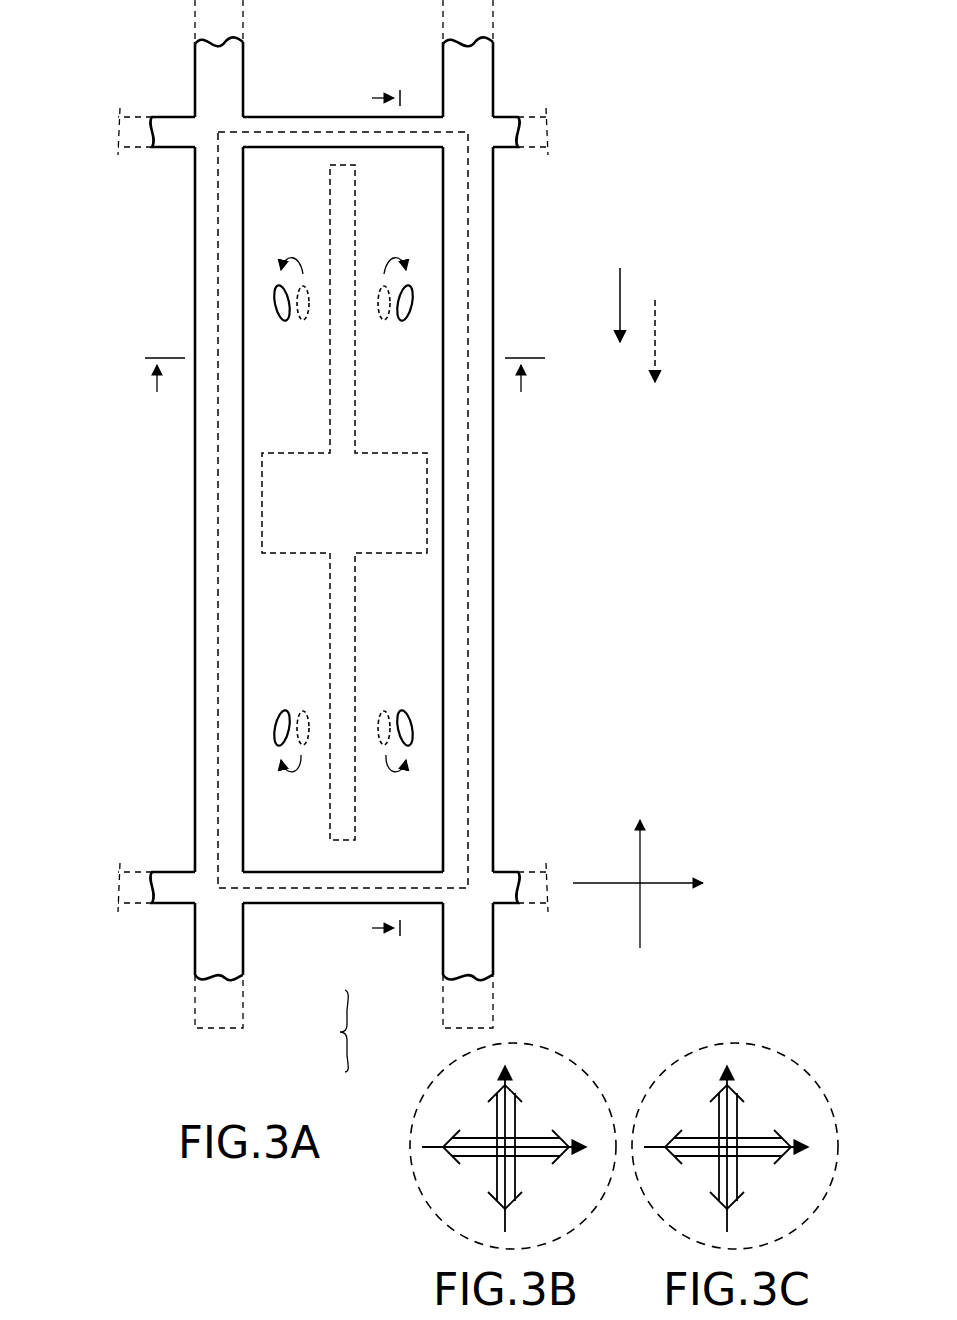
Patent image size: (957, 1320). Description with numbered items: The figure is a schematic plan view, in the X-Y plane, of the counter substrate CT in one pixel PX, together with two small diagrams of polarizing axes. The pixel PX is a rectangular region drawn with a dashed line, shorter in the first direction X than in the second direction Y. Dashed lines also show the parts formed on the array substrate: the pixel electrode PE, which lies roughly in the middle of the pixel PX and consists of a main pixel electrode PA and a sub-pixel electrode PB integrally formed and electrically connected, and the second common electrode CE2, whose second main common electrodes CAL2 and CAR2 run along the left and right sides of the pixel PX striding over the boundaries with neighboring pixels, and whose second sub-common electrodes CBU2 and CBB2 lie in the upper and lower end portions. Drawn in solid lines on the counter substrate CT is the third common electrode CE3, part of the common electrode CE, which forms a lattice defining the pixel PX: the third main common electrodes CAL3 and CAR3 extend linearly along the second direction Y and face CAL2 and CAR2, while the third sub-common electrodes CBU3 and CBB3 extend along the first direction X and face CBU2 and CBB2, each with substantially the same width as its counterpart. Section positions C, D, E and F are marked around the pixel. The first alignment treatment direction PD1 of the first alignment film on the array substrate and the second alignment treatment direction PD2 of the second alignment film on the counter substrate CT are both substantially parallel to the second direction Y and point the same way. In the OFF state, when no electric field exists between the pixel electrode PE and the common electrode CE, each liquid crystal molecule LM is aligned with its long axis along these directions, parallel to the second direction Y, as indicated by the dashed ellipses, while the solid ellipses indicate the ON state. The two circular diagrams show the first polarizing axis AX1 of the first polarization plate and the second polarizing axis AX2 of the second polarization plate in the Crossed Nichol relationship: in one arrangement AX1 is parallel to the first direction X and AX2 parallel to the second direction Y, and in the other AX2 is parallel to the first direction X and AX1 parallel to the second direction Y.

In FIG. 3A, the second main common electrode CAL2 is at (195, 18).
In FIG. 3A, the second main common electrode CAR2 is at (495, 12).
In FIG. 3A, the counter substrate CT is at (622, 60).
In FIG. 3A, the third sub-common electrode CBU3 is at (300, 117).
In FIG. 3A, the second sub-common electrode CBU2 is at (143, 150).
In FIG. 3A, the third main common electrode CAL3 is at (195, 797).
In FIG. 3A, the third main common electrode CAR3 is at (493, 631).
In FIG. 3A, the third sub-common electrode CBB3 is at (305, 903).
In FIG. 3A, the second sub-common electrode CBB2 is at (138, 905).
In FIG. 3A, the third common electrode CE3 is at (247, 967).
In FIG. 3A, the second common electrode CE2 is at (247, 1034).
In FIG. 3A, the common electrode CE is at (367, 1031).
In FIG. 3A, the pixel PX is at (474, 126).
In FIG. 3A, the pixel electrode PE is at (352, 347).
In FIG. 3A, the main pixel electrode PA is at (330, 208).
In FIG. 3A, the sub-pixel electrode PB is at (400, 555).
In FIG. 3A, the liquid crystal molecule LM is at (570, 515).
In FIG. 3A, the section line C is at (165, 387).
In FIG. 3A, the section line D is at (525, 387).
In FIG. 3A, the section line E is at (377, 99).
In FIG. 3A, the section line F is at (377, 929).
In FIG. 3A, the second alignment treatment direction PD2 is at (622, 278).
In FIG. 3A, the first alignment treatment direction PD1 is at (657, 318).
In FIG. 3A, the first direction X is at (652, 883).
In FIG. 3B, the first direction X is at (517, 1148).
In FIG. 3C, the first direction X is at (739, 1148).
In FIG. 3A, the second direction Y is at (638, 863).
In FIG. 3B, the second direction Y is at (515, 1142).
In FIG. 3C, the second direction Y is at (737, 1142).
In FIG. 3B, the first polarizing axis AX1 is at (540, 1160).
In FIG. 3C, the first polarizing axis AX1 is at (738, 1108).
In FIG. 3B, the second polarizing axis AX2 is at (516, 1108).
In FIG. 3C, the second polarizing axis AX2 is at (762, 1160).